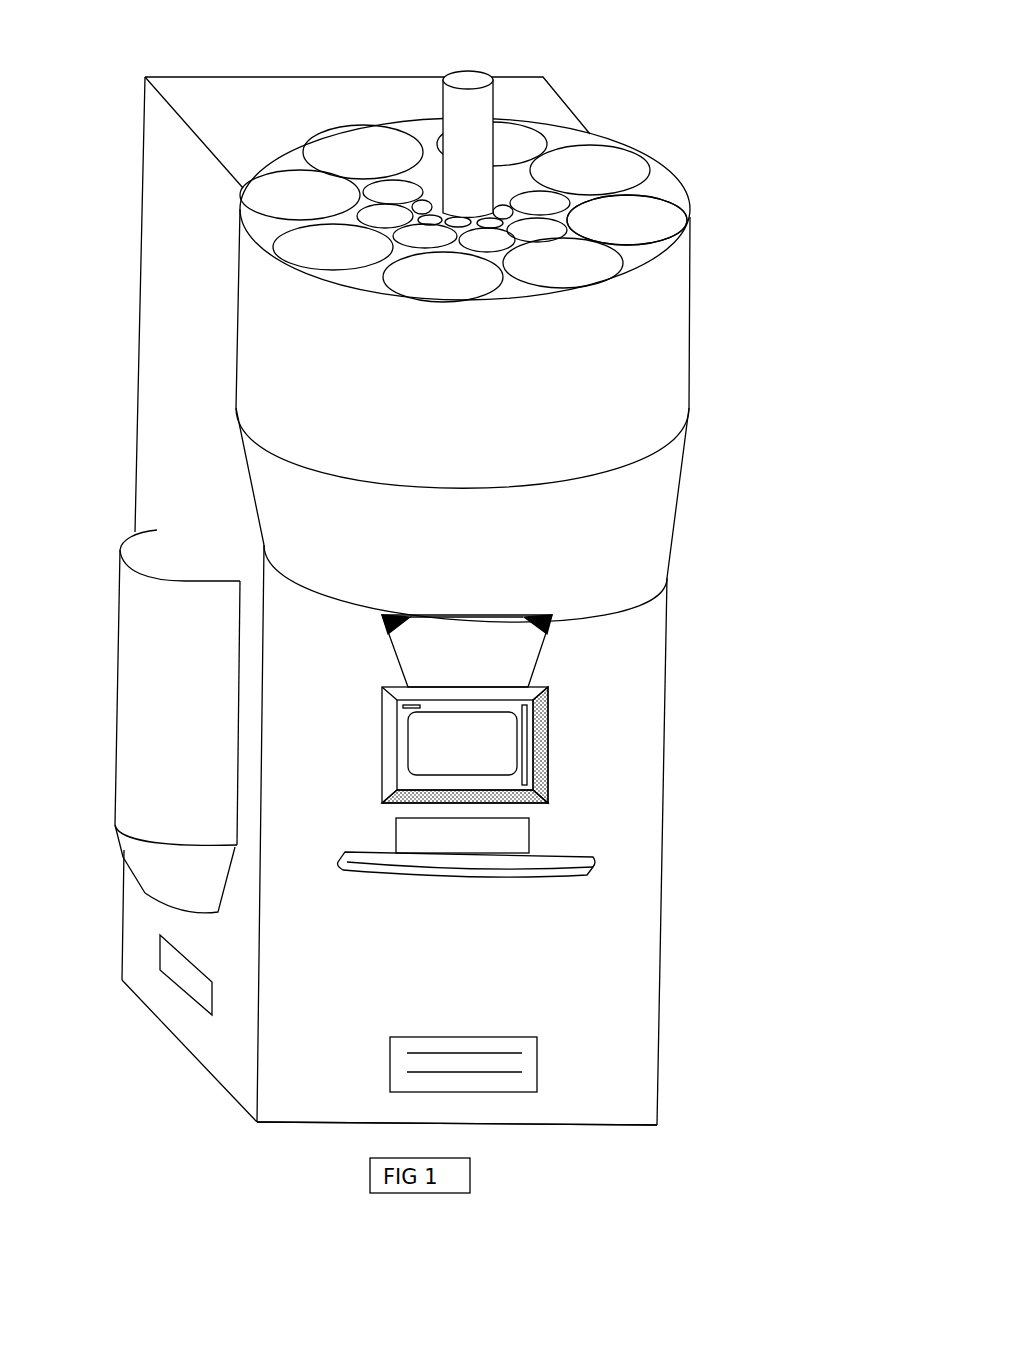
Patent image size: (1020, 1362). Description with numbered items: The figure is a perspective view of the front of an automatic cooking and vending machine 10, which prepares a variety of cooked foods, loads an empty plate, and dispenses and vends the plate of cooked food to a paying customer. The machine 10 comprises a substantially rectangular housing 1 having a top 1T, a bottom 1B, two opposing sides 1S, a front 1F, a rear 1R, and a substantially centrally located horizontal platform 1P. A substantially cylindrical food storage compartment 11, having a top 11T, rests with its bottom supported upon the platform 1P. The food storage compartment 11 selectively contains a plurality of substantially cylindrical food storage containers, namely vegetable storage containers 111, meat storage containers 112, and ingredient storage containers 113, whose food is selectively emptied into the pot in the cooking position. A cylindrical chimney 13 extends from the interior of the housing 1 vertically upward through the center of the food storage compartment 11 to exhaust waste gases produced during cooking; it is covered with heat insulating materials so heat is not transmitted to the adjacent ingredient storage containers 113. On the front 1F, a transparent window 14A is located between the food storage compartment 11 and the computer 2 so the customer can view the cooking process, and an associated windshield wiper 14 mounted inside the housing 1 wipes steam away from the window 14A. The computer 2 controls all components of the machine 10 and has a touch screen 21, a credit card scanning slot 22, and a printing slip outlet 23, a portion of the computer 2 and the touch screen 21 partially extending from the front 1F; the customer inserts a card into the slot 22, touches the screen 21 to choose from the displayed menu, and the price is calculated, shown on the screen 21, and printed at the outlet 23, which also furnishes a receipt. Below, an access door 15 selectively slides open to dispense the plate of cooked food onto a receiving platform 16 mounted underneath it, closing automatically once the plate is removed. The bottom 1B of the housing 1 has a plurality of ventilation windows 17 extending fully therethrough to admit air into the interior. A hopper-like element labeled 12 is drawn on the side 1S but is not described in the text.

The housing 1 is at (410, 600).
The top 1T is at (237, 92).
The rear 1R is at (140, 258).
The sides 1S is at (170, 468).
The horizontal platform 1P is at (632, 592).
The front 1F is at (637, 1038).
The bottom 1B is at (583, 1127).
The automatic cooking and vending machine 10 is at (180, 1086).
The food storage compartment 11 is at (515, 350).
The top 11T is at (663, 183).
The vegetable storage containers 111 is at (627, 173).
The meat storage containers 112 is at (545, 203).
The ingredient storage containers 113 is at (440, 219).
The hopper 12 is at (145, 713).
The chimney 13 is at (480, 118).
The windshield wiper 14 is at (504, 647).
The transparent window 14A is at (550, 630).
The access door 15 is at (510, 837).
The receiving platform 16 is at (563, 858).
The ventilation windows 17 is at (173, 963).
The computer 2 is at (460, 733).
The touch screen 21 is at (415, 752).
The credit card scanning slot 22 is at (533, 718).
The printing slip outlet 23 is at (400, 707).